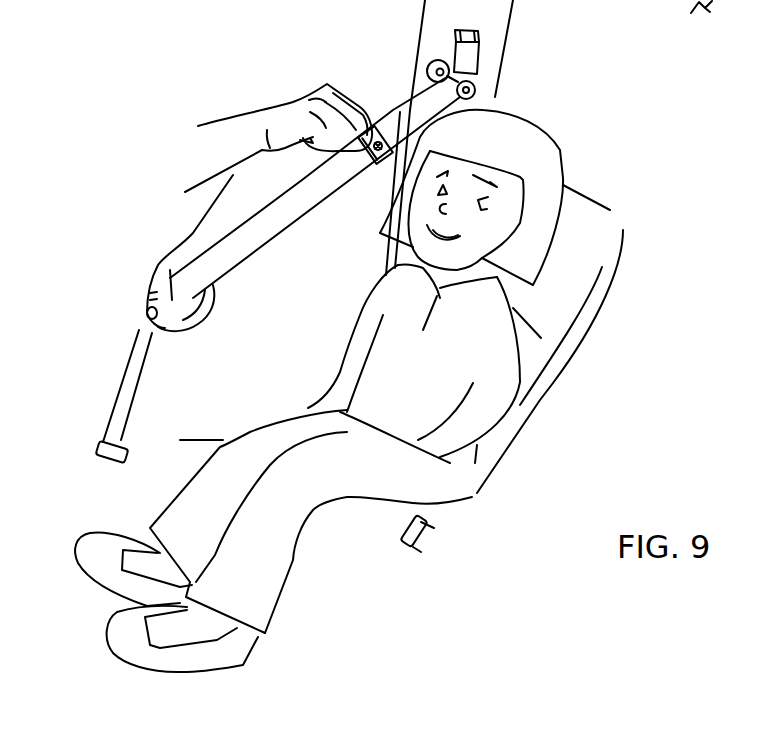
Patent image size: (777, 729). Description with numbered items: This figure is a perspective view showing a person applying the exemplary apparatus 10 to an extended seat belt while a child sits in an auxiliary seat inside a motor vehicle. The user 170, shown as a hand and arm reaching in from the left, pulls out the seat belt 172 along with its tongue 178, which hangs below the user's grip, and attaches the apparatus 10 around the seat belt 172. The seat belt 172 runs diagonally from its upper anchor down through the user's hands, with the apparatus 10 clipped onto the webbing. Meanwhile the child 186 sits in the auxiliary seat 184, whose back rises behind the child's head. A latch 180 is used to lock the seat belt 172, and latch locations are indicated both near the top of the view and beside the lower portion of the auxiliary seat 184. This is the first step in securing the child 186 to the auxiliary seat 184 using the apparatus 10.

The apparatus 10 is at (386, 22).
The user 170 is at (228, 133).
The seat belt 172 is at (422, 98).
The tongue 178 is at (112, 457).
The latch 180 is at (693, 10).
The auxiliary seat 184 is at (577, 332).
The child 186 is at (540, 153).